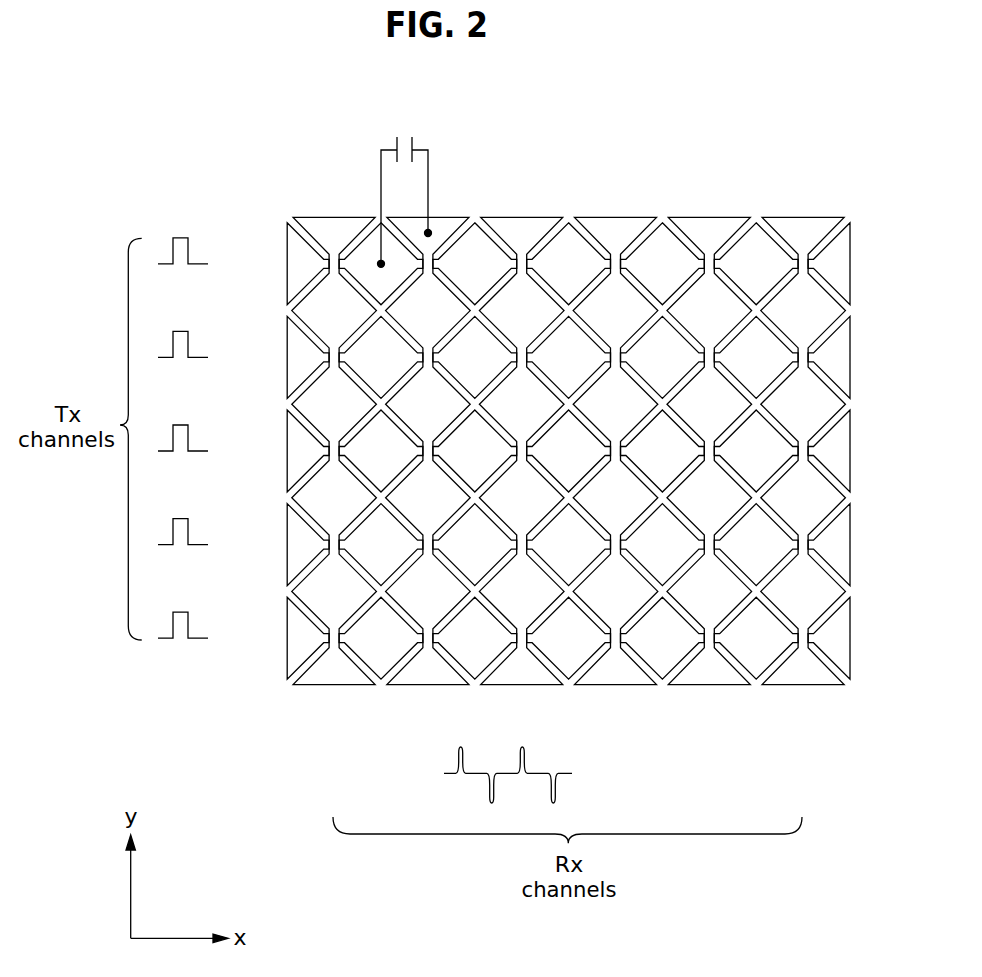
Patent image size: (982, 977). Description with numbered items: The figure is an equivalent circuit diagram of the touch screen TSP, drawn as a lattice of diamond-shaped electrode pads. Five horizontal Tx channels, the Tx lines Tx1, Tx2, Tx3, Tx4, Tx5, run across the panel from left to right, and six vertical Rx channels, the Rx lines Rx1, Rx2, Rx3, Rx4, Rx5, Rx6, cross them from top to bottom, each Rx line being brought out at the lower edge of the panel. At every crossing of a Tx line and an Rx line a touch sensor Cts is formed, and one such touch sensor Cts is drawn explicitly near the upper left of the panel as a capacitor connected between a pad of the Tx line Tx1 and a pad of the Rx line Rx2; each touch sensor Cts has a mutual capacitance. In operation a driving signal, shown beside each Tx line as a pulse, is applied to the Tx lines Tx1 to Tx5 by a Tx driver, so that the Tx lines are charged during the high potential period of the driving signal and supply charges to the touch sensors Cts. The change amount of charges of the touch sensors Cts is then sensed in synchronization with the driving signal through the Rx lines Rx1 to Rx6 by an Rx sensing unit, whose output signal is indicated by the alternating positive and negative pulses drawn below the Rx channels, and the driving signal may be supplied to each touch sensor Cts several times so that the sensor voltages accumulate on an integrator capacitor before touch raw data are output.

The touch screen TSP is at (504, 458).
The touch sensors Cts is at (405, 187).
The Tx line Tx1 is at (274, 264).
The Tx line Tx2 is at (274, 357).
The Tx line Tx3 is at (274, 451).
The Tx line Tx4 is at (274, 545).
The Tx line Tx5 is at (274, 638).
The Rx line Rx1 is at (334, 685).
The Rx line Rx2 is at (428, 685).
The Rx line Rx3 is at (522, 685).
The Rx line Rx4 is at (616, 685).
The Rx line Rx5 is at (709, 685).
The Rx line Rx6 is at (803, 685).